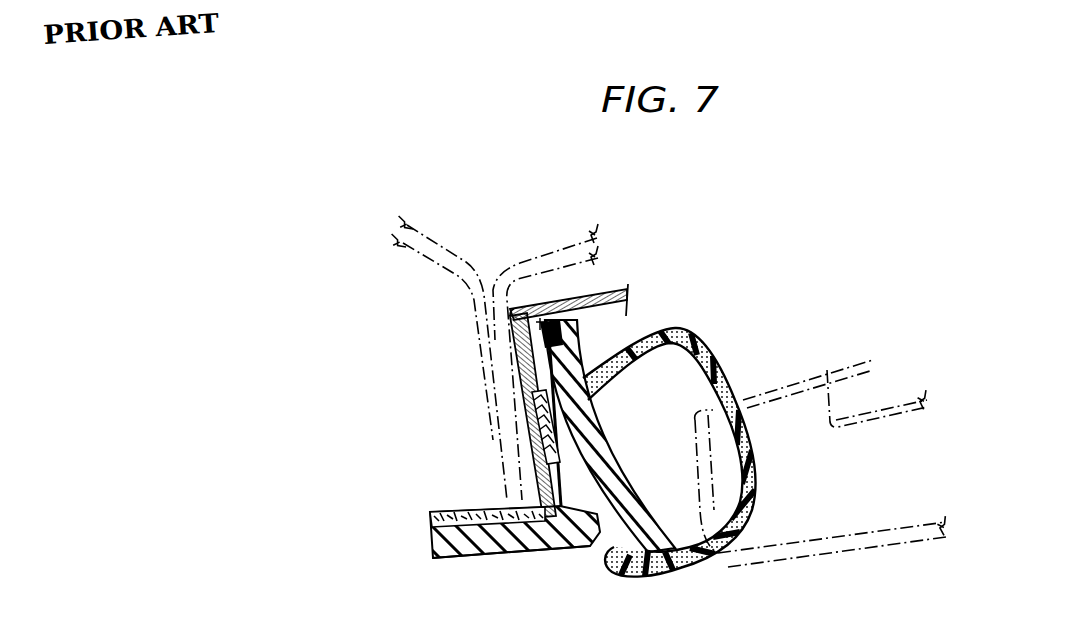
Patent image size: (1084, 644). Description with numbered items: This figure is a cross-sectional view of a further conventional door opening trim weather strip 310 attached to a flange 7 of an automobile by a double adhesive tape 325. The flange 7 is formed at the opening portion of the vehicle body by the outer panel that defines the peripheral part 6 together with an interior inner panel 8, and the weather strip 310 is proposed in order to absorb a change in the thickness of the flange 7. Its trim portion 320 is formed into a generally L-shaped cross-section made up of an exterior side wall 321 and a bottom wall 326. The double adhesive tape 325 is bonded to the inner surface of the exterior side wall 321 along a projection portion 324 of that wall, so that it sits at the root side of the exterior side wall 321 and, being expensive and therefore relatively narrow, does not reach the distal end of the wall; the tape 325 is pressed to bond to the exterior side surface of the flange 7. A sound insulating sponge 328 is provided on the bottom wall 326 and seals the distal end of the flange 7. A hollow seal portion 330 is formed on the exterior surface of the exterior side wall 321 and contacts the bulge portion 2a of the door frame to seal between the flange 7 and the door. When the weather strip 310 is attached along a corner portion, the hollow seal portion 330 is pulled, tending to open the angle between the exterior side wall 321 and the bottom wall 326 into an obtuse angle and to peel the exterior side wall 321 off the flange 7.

The bulge portion 2a is at (838, 552).
The peripheral part 6 is at (603, 292).
The flange 7 is at (540, 257).
The inner panel 8 is at (470, 325).
The opening trim weather strip 310 is at (778, 462).
The trim portion 320 is at (537, 548).
The exterior side wall 321 is at (534, 432).
The projection portion 324 is at (552, 466).
The double adhesive tape 325 is at (538, 402).
The bottom wall 326 is at (478, 556).
The sound insulating sponge 328 is at (427, 521).
The hollow seal portion 330 is at (680, 335).